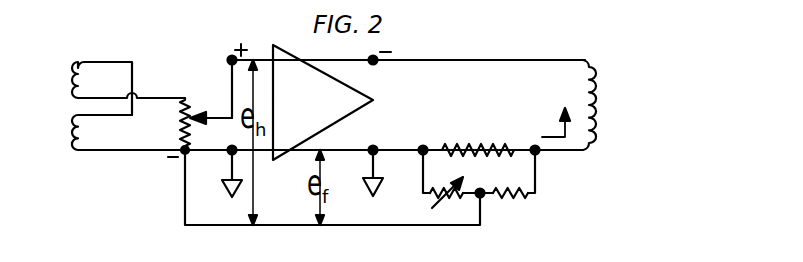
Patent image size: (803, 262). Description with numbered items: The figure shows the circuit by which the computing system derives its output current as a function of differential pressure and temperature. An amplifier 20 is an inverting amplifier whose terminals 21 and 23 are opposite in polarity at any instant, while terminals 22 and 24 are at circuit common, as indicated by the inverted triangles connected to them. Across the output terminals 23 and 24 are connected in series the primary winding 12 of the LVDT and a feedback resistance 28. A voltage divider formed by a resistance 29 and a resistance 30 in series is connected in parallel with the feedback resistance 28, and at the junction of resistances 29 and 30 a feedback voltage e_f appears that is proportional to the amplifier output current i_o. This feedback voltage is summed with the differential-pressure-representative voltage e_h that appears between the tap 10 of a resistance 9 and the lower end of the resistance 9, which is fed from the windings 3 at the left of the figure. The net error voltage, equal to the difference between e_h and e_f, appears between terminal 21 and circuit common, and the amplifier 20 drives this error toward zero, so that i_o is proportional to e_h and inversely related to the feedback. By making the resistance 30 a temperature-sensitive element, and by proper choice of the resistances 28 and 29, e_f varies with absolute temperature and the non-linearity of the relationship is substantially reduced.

The pickup coil windings 3 is at (77, 77).
The resistance 9 is at (180, 108).
The tap 10 is at (222, 116).
The primary winding 12 is at (594, 70).
The amplifier 20 is at (319, 112).
The terminal 21 is at (229, 58).
The terminal 22 is at (230, 151).
The terminal 23 is at (376, 63).
The terminal 24 is at (375, 148).
The feedback resistance 28 is at (466, 144).
The resistance 29 is at (503, 198).
The resistance 30 is at (457, 198).